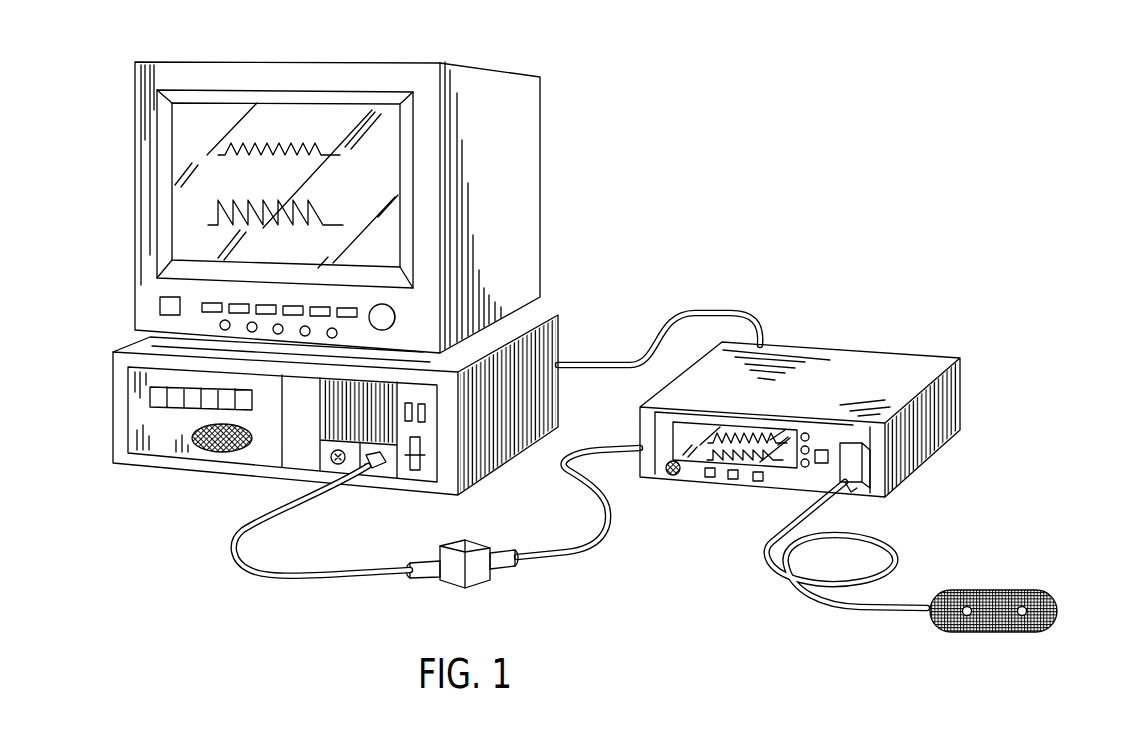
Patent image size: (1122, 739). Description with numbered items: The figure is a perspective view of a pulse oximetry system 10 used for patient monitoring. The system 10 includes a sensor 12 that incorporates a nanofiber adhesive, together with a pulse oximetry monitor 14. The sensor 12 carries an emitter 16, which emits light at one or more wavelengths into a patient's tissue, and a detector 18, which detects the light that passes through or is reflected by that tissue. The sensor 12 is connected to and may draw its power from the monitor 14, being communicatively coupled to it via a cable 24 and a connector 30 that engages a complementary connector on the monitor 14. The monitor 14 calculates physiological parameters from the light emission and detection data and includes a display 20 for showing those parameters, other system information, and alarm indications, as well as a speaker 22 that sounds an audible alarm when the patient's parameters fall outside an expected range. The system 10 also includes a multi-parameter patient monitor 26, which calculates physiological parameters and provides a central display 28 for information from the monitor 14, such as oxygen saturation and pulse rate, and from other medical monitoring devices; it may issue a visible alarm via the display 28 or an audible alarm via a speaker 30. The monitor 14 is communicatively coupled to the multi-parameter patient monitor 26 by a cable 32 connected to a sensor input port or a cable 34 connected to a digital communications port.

The pulse oximetry system 10 is at (822, 200).
The sensor 12 is at (1007, 605).
The pulse oximetry monitor 14 is at (798, 422).
The emitter 16 is at (966, 615).
The detector 18 is at (1023, 615).
The display 20 is at (742, 460).
The speaker 22 is at (665, 477).
The cable 24 is at (790, 600).
The multi-parameter patient monitor 26 is at (320, 193).
The central display 28 is at (180, 222).
The connector 30 is at (207, 452).
The cable 32 is at (553, 552).
The cable 34 is at (687, 310).